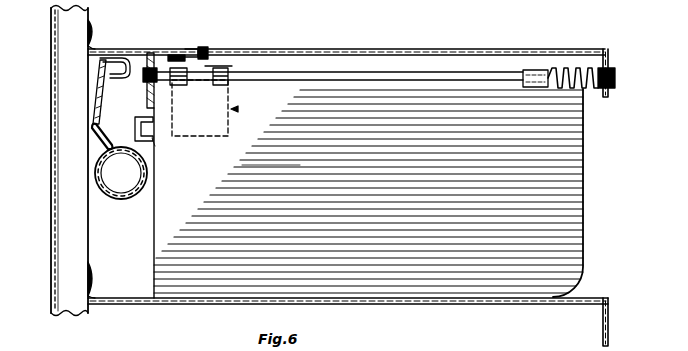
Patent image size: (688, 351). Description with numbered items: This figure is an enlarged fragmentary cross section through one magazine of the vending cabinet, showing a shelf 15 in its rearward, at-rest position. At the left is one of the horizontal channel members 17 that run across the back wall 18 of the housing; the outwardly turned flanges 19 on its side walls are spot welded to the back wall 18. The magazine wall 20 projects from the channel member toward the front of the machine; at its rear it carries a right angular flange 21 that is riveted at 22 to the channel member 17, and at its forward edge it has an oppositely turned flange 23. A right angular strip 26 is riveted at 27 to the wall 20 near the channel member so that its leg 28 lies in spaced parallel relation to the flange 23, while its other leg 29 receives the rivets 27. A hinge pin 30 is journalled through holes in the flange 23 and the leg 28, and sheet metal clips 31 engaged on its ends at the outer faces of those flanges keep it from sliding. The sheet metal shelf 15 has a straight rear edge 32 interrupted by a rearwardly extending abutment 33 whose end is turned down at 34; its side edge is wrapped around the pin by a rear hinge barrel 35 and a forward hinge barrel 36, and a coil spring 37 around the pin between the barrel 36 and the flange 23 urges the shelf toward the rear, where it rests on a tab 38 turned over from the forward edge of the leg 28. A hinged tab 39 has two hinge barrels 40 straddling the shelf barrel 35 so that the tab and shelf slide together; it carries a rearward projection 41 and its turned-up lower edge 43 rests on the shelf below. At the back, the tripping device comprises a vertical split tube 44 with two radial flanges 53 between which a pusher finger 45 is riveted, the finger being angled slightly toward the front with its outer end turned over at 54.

The shelf 15 is at (592, 195).
The channel member 17 is at (72, 42).
The back wall 18 is at (56, 78).
The outwardly turned flange 19 is at (62, 146).
The wall 20 is at (450, 49).
The right angular flange 21 is at (93, 47).
The rivet 22 is at (92, 36).
The flange 23 is at (609, 58).
The right angular strip 26 is at (207, 50).
The rivet 27 is at (190, 50).
The leg 28 is at (146, 96).
The leg 29 is at (170, 52).
The hinge pin 30 is at (358, 72).
The sheet metal clip 31 is at (146, 84).
The rear edge 32 is at (160, 222).
The abutment 33 is at (150, 128).
The turned down end 34 is at (153, 144).
The hinge barrel 35 is at (216, 67).
The hinge barrel 36 is at (536, 70).
The coil spring 37 is at (590, 68).
The tab 38 is at (176, 120).
The hinged tab 39 is at (238, 109).
The hinge barrel 40 is at (215, 84).
The projection 41 is at (172, 85).
The lower edge 43 is at (240, 167).
The vertical tube 44 is at (123, 199).
The pusher finger 45 is at (96, 104).
The radial flange 53 is at (102, 150).
The turned over end 54 is at (110, 67).